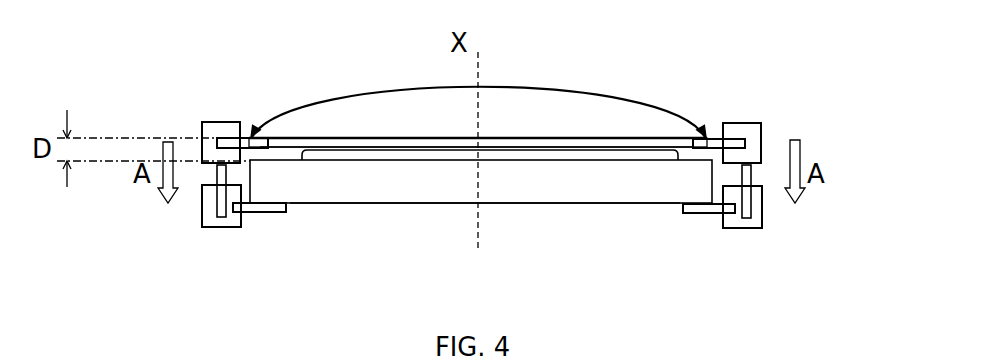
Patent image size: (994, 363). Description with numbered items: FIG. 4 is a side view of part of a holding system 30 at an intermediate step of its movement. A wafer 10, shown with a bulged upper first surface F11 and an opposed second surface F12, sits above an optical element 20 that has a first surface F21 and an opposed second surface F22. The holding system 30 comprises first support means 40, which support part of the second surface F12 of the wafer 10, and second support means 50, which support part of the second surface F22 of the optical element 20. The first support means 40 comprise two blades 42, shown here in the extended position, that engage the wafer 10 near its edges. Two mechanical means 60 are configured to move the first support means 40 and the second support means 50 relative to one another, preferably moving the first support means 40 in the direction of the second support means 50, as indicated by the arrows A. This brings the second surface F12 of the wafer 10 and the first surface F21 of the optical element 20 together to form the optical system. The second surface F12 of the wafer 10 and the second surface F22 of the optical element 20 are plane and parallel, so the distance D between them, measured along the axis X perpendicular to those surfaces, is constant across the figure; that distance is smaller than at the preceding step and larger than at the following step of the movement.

The wafer 10 is at (333, 118).
The optical element 20 is at (527, 178).
The holding system 30 is at (818, 87).
The first support means 40 is at (207, 137).
The blades 42 is at (255, 135).
The second support means 50 is at (207, 222).
The mechanical means 60 is at (222, 178).
The first surface of the wafer F11 is at (623, 95).
The second surface of the wafer F12 is at (595, 148).
The first surface of the optical element F21 is at (362, 170).
The second surface of the optical element F22 is at (387, 206).